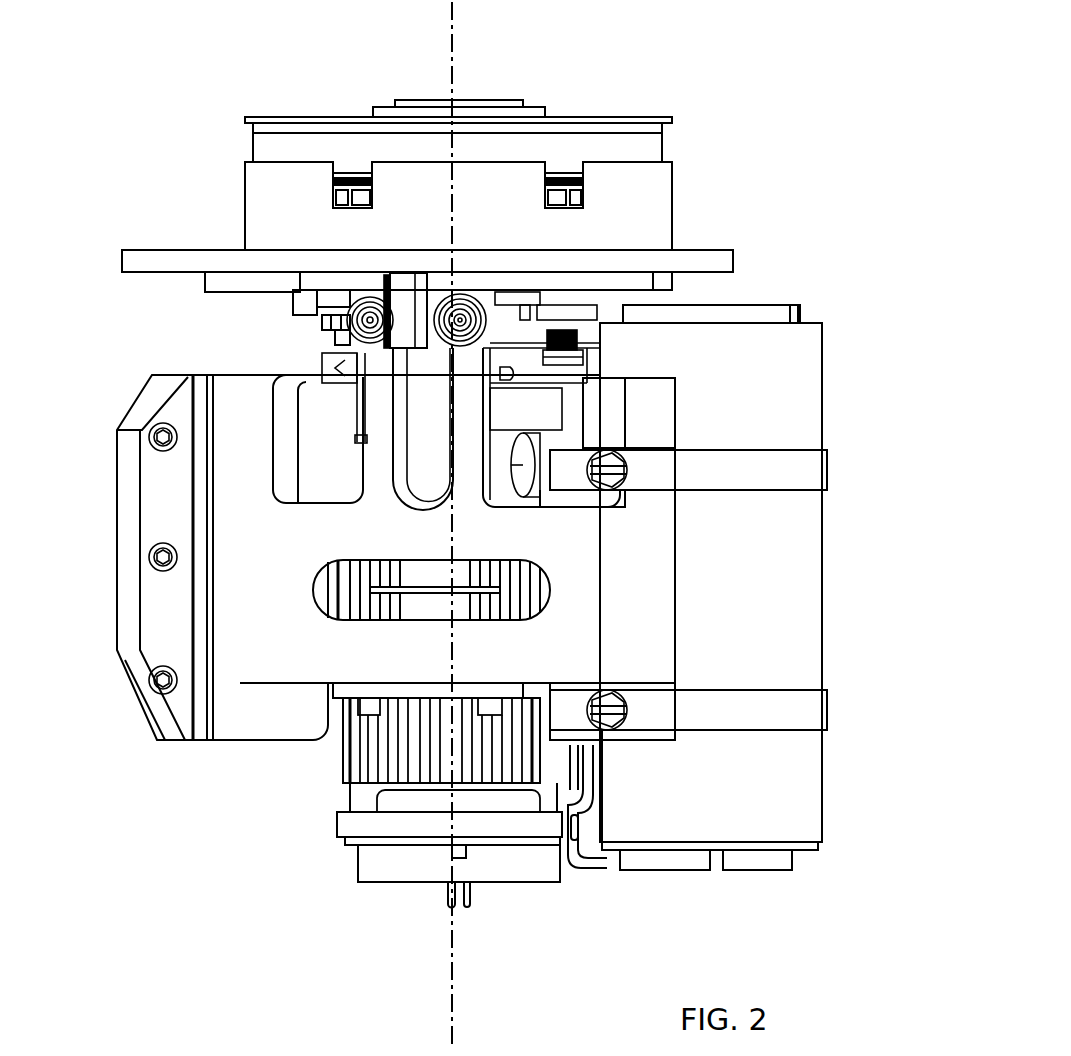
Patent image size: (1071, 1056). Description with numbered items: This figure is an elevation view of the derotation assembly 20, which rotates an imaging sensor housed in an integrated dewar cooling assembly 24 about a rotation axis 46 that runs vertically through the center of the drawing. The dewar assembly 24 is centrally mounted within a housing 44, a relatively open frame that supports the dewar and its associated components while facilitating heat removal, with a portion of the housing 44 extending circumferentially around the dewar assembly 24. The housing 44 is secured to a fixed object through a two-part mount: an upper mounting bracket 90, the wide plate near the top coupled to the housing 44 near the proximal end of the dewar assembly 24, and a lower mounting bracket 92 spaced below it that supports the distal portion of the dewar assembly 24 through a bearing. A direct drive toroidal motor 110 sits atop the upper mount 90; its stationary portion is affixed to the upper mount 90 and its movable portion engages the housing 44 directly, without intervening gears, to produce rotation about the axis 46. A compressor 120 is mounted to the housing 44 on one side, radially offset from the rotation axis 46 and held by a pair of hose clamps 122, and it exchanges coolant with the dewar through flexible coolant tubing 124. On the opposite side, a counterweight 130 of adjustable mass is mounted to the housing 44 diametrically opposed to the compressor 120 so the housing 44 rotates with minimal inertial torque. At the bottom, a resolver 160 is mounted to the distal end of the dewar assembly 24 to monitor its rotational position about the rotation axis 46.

The derotation assembly 20 is at (198, 86).
The integrated dewar cooling assembly 24 is at (330, 761).
The housing 44 is at (305, 663).
The rotation axis 46 is at (450, 956).
The upper mounting bracket 90 is at (155, 262).
The lower mounting bracket 92 is at (353, 827).
The motor 110 is at (520, 145).
The compressor 120 is at (745, 812).
The hose clamps 122 is at (765, 718).
The coolant tubing 124 is at (587, 860).
The counterweight 130 is at (170, 627).
The resolver 160 is at (498, 872).